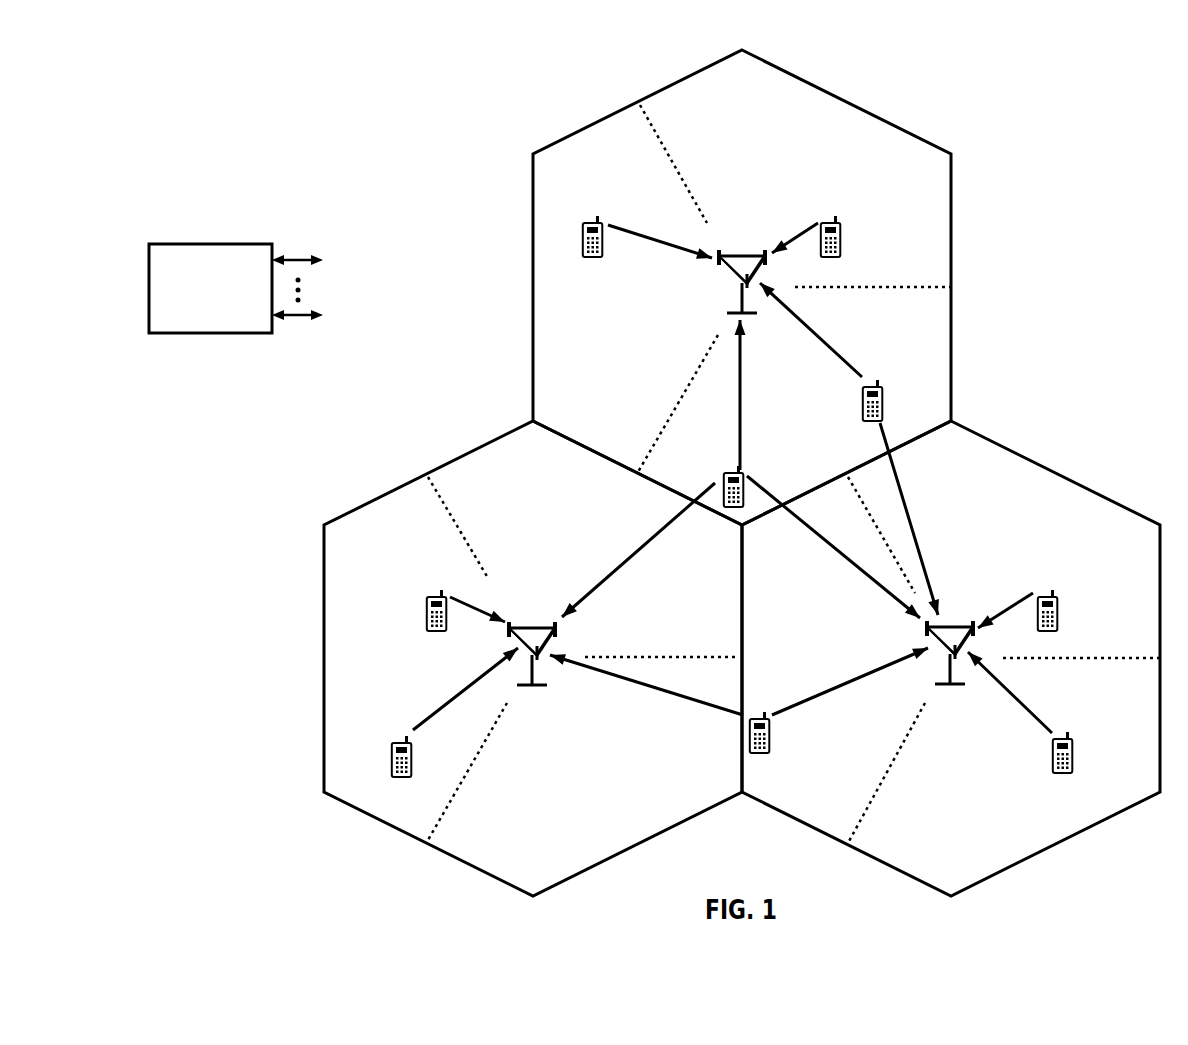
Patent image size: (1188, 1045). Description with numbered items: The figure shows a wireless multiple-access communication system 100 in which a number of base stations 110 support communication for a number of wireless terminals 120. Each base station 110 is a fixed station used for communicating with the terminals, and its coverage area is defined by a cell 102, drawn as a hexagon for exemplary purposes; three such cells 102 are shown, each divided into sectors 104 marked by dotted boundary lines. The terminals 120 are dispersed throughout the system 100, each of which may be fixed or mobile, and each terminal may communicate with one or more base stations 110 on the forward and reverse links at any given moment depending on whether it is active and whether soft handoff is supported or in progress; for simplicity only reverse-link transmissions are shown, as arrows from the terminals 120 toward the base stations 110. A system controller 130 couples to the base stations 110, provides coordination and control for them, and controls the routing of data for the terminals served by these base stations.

The wireless multiple-access communication system 100 is at (1112, 81).
The cell 102 is at (428, 476).
The sector 104 is at (763, 83).
The base station 110 is at (748, 442).
The wireless terminal 120 is at (723, 474).
The system controller 130 is at (208, 244).